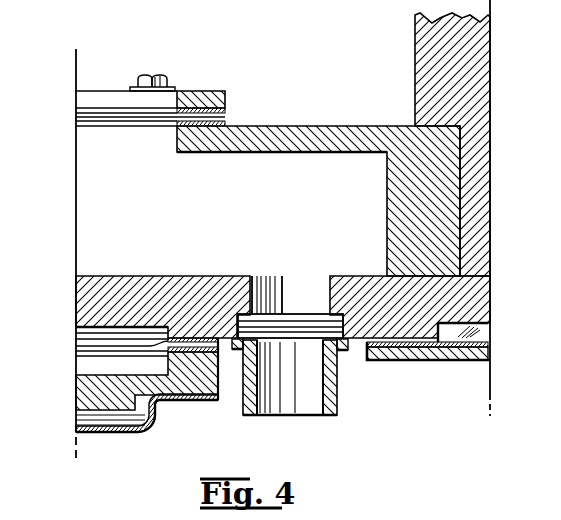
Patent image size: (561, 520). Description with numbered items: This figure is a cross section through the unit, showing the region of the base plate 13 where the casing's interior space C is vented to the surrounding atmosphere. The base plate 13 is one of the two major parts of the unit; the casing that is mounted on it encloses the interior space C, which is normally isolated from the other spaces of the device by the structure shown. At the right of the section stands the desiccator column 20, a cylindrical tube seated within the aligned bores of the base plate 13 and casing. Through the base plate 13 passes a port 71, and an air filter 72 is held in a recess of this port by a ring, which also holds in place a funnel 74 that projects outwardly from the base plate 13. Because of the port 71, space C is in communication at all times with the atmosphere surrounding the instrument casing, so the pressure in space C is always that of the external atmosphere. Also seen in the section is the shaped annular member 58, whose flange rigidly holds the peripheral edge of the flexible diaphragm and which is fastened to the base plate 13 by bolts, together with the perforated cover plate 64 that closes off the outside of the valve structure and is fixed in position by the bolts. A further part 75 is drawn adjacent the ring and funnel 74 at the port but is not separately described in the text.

The base plate 13 is at (95, 298).
The desiccator column 20 is at (475, 65).
The shaped annular member 58 is at (93, 389).
The cover plate 64 is at (102, 432).
The port 71 is at (278, 293).
The air filter 72 is at (297, 295).
The funnel 74 is at (333, 415).
The lock washer lip 75 is at (343, 351).
The interior space C is at (115, 176).